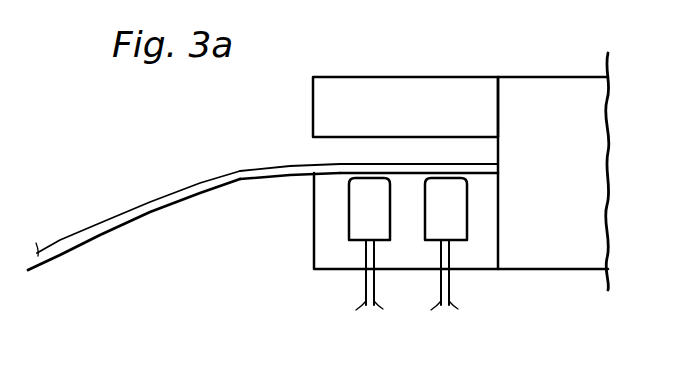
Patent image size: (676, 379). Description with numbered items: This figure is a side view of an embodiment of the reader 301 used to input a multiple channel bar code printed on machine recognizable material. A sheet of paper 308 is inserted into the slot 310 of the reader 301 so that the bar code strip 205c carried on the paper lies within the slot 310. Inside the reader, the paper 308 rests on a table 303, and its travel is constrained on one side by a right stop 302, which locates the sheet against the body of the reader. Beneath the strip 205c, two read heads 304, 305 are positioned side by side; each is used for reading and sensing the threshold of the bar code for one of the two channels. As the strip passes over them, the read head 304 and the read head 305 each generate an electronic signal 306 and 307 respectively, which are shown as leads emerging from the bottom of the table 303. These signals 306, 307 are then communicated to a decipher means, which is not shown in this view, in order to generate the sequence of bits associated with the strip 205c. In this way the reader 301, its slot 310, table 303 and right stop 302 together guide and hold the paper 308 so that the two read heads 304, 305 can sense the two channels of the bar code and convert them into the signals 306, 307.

The reader 301 is at (323, 103).
The right stop 302 is at (498, 110).
The strip 205c is at (416, 164).
The slot 310 is at (316, 147).
The sheet of paper 308 is at (148, 195).
The table 303 is at (337, 182).
The read head 304 is at (352, 231).
The read head 305 is at (467, 228).
The electronic signal 306 is at (378, 292).
The electronic signal 307 is at (450, 293).